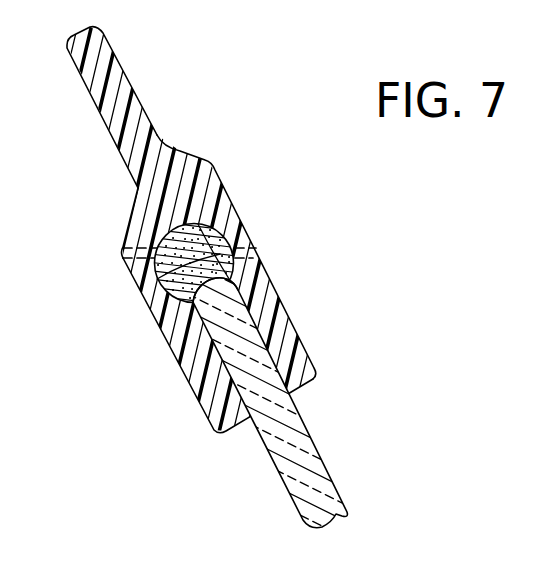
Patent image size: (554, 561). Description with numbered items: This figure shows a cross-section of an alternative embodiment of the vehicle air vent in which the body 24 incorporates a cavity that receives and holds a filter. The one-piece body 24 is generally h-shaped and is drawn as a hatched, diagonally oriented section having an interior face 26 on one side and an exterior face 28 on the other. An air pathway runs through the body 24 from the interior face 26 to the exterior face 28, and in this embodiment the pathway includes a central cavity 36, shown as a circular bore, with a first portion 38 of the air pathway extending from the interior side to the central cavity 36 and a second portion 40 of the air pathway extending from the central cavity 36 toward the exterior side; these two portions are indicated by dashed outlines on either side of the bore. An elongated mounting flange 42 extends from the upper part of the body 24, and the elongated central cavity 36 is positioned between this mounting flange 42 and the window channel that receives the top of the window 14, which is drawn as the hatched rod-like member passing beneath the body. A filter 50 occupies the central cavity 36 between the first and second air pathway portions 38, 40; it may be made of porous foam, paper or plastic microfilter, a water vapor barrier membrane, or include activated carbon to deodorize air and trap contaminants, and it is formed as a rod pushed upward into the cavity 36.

The window 14 is at (293, 453).
The body 24 is at (197, 176).
The interior face 26 is at (146, 306).
The exterior face 28 is at (258, 264).
The central cavity 36 is at (226, 279).
The first portion of the air pathway 38 is at (130, 237).
The second portion of the air pathway 40 is at (246, 223).
The elongated mounting flange 42 is at (112, 90).
The filter 50 is at (158, 277).